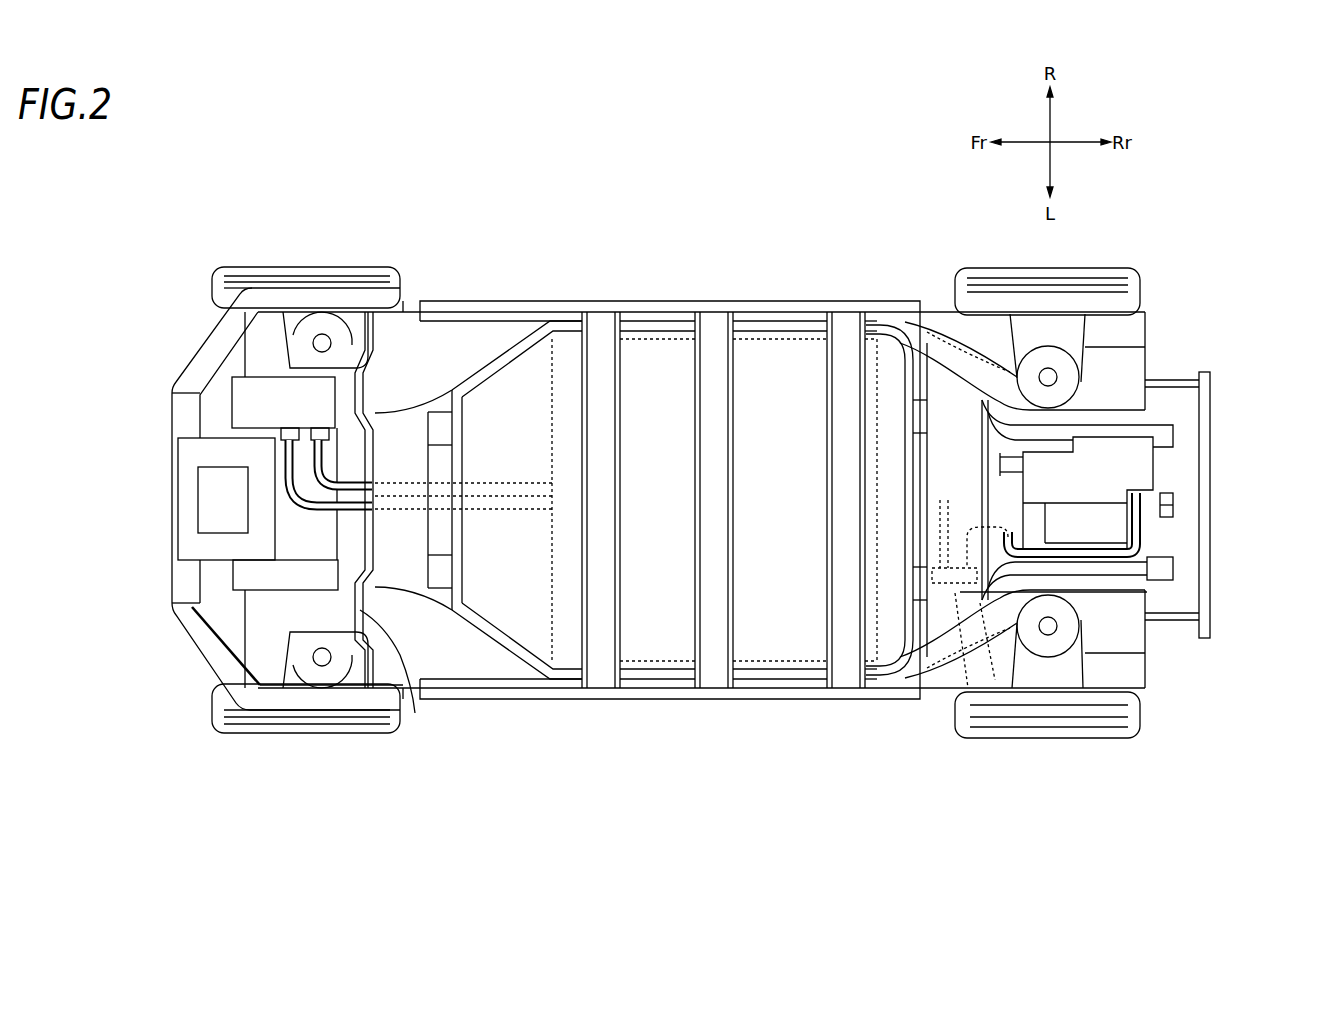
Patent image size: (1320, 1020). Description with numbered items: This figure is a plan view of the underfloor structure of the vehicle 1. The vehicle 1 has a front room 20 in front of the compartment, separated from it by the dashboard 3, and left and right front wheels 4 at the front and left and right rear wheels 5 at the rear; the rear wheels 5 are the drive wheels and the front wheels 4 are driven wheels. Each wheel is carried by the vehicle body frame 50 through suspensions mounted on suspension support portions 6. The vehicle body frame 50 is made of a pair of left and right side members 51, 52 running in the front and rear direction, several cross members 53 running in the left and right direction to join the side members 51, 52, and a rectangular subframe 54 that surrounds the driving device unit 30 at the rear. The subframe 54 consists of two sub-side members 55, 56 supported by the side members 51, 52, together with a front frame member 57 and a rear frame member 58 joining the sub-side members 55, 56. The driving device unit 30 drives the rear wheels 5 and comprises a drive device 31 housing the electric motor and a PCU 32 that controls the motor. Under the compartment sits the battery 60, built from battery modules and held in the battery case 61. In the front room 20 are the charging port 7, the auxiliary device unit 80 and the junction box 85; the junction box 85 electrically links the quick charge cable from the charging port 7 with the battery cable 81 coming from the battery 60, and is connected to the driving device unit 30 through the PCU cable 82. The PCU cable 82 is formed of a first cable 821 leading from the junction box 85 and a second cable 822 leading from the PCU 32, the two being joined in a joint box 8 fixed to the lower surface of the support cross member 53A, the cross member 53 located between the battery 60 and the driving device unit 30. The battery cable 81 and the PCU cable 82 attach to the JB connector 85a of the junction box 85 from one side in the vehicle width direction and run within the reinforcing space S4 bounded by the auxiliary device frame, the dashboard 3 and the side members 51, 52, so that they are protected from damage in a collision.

The vehicle 1 is at (737, 211).
The dashboard 3 is at (380, 378).
The front wheel 4 is at (336, 267).
The rear wheel 5 is at (1080, 268).
The suspension support portion 6 is at (278, 342).
The charging port 7 is at (205, 488).
The joint box 8 is at (932, 689).
The front room 20 is at (213, 579).
The driving device unit 30 is at (1248, 462).
The drive device 31 is at (1165, 537).
The Power Control Unit (PCU) 32 is at (1160, 458).
The vehicle body frame 50 is at (806, 298).
The side member 51 is at (746, 314).
The side member 52 is at (771, 701).
The cross member 53 is at (471, 311).
The support cross member 53A is at (968, 690).
The subframe 54 is at (1168, 450).
The sub-side member 55 is at (1180, 436).
The sub-side member 56 is at (1175, 590).
The front frame member 57 is at (955, 585).
The rear frame member 58 is at (1175, 570).
The battery 60 is at (528, 325).
The battery case 61 is at (650, 331).
The auxiliary device unit 80 is at (232, 356).
The battery cable 81 is at (213, 647).
The PCU cable 82 is at (322, 511).
The junction box 85 is at (215, 618).
The JB connector 85a is at (318, 426).
The first cable 821 is at (778, 494).
The second cable 822 is at (1206, 612).
The reinforcing space S4 is at (478, 282).